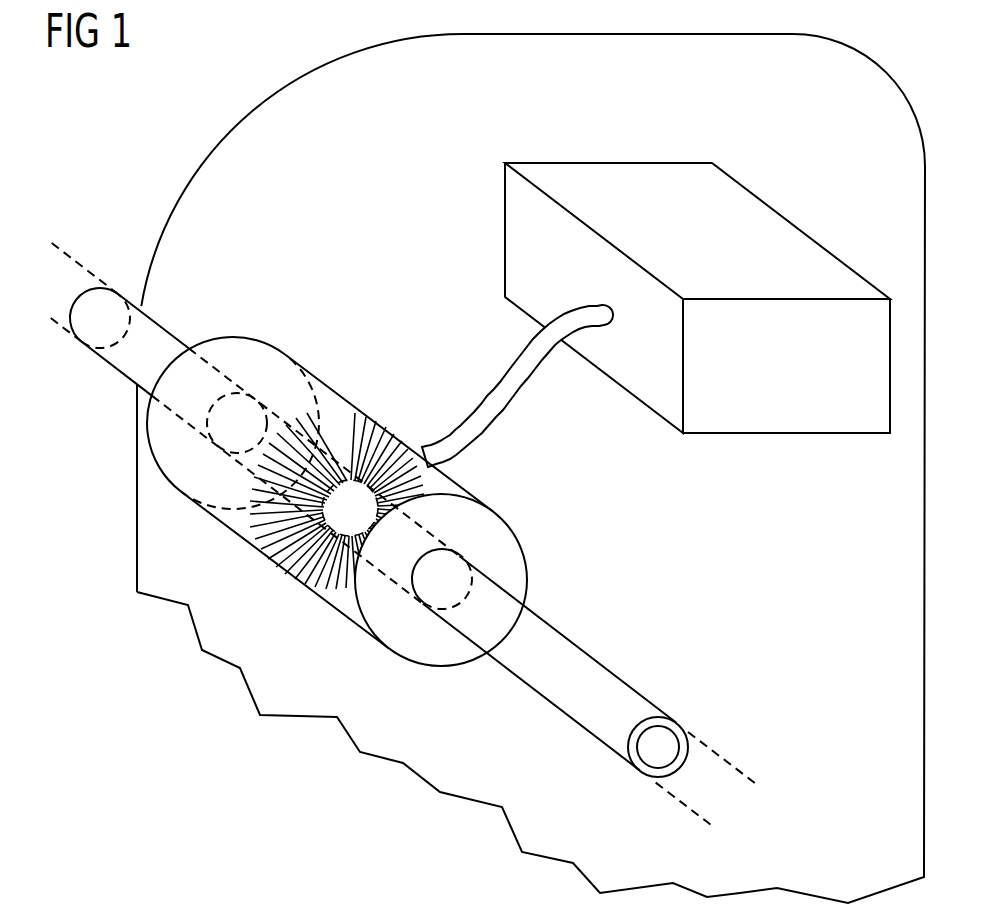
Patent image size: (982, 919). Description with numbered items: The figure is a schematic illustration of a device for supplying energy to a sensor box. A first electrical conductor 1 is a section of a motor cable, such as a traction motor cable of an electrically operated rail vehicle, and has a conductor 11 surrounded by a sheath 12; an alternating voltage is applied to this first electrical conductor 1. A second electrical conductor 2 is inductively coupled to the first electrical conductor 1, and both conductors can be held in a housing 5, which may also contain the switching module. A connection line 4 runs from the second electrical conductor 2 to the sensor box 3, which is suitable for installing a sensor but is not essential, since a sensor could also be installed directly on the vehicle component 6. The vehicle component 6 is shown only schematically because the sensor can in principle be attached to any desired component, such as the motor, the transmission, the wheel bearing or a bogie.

The first electrical conductor 1 is at (401, 535).
The second electrical conductor 2 is at (263, 533).
The sensor box 3 is at (802, 423).
The connection line 4 is at (500, 402).
The housing 5 is at (363, 501).
The vehicle component 6 is at (252, 143).
The conductor 11 is at (663, 752).
The sheath 12 is at (675, 727).